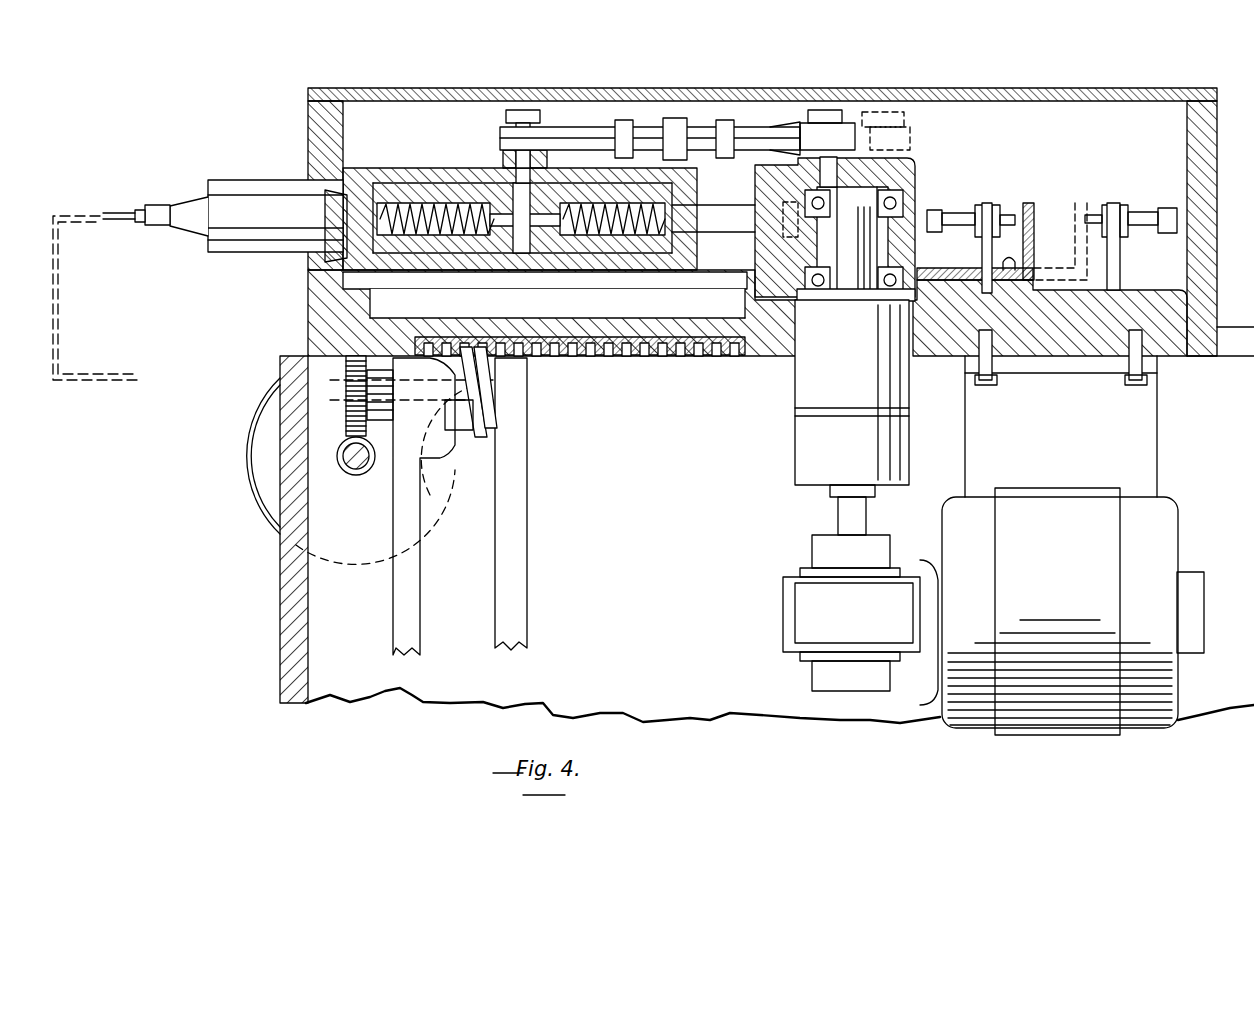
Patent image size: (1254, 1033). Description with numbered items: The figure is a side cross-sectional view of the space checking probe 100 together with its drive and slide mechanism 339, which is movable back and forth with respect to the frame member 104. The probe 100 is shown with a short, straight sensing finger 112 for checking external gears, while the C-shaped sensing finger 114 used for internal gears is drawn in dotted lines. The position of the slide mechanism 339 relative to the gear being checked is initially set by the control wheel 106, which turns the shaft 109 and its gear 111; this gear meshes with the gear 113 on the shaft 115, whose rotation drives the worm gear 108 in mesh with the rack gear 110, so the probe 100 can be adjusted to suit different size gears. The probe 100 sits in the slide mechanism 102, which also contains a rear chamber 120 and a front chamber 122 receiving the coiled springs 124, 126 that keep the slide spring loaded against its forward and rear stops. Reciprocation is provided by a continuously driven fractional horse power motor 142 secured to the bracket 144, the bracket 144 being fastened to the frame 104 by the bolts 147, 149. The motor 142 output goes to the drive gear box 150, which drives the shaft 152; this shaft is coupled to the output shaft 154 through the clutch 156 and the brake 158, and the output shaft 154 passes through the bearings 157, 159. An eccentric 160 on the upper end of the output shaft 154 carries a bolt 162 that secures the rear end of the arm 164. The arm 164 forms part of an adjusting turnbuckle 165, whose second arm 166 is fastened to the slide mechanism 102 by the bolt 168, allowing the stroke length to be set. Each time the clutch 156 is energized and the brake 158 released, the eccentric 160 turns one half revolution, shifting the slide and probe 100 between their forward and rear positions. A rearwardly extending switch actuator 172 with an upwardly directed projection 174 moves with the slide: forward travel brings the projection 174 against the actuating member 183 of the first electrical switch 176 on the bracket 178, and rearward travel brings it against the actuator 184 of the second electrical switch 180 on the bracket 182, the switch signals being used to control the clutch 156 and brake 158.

The drive and slide mechanism 339 is at (322, 131).
The space checking probe 100 is at (246, 252).
The slide mechanism 102 is at (432, 178).
The frame member 104 is at (292, 417).
The control wheel 106 is at (248, 492).
The worm gear 108 is at (498, 430).
The shaft 109 is at (360, 472).
The rack gear 110 is at (592, 358).
The gear 111 is at (340, 458).
The short, straight sensing finger 112 is at (120, 211).
The gear 113 is at (350, 382).
The C-shaped sensing finger 114 is at (122, 353).
The shaft 115 is at (530, 398).
The rear chamber 120 is at (585, 248).
The front chamber 122 is at (455, 198).
The coiled spring 124 is at (650, 258).
The coiled spring 126 is at (388, 203).
The fractional horse power motor 142 is at (1085, 616).
The bracket 144 is at (1090, 468).
The bolt 147 is at (988, 392).
The bolt 149 is at (1130, 392).
The drive gear box 150 is at (818, 603).
The shaft 152 is at (848, 510).
The output shaft 154 is at (872, 245).
The clutch 156 is at (830, 451).
The bearing 157 is at (920, 200).
The brake 158 is at (806, 387).
The bearing 159 is at (890, 297).
The eccentric 160 is at (896, 128).
The bolt 162 is at (840, 112).
The arm 164 is at (772, 125).
The adjusting turnbuckle 165 is at (680, 115).
The second arm 166 is at (590, 127).
The bolt 168 is at (524, 108).
The switch actuator 172 is at (1009, 270).
The projection 174 is at (1036, 208).
The first electrical switch 176 is at (958, 218).
The bracket 178 is at (983, 255).
The second electrical switch 180 is at (1147, 212).
The bracket 182 is at (1122, 258).
The actuating member 183 is at (1012, 213).
The actuator 184 is at (1096, 214).